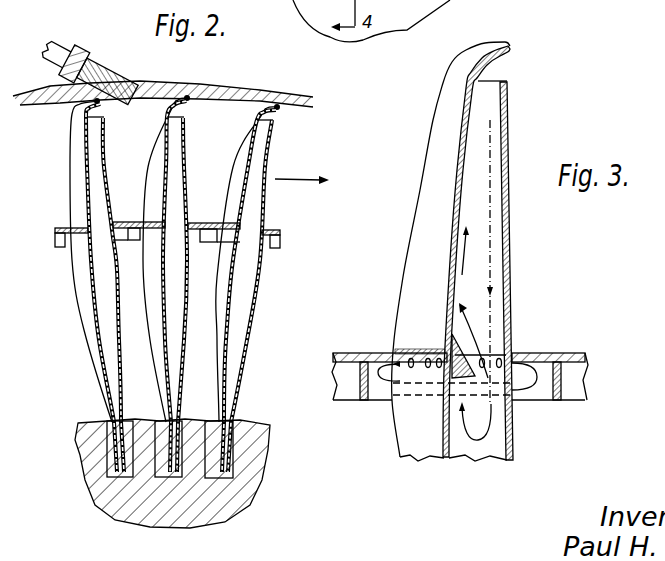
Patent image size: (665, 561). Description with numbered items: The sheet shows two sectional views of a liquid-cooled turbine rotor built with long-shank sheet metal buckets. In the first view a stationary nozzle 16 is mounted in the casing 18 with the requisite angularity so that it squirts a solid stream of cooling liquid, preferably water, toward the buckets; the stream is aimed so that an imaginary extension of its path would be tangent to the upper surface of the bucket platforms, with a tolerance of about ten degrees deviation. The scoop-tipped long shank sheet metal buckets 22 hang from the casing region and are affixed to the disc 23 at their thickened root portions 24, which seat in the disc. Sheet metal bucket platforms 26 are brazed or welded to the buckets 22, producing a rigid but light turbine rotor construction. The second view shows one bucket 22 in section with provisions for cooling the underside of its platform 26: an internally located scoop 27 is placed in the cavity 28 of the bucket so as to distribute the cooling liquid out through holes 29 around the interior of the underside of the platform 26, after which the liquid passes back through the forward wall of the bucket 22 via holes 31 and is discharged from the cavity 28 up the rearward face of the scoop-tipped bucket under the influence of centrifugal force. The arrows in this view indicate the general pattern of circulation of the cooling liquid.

In FIG. 2, the nozzle 16 is at (128, 86).
In FIG. 2, the casing 18 is at (226, 86).
In FIG. 2, the long shank sheet metal bucket 22 is at (159, 142).
In FIG. 2, the disc 23 is at (90, 421).
In FIG. 2, the thickened root portion 24 is at (110, 460).
In FIG. 2, the sheet metal bucket platform 26 is at (58, 227).
In FIG. 3, the sheet metal bucket platform 26 is at (380, 352).
In FIG. 3, the internally located scoop 27 is at (460, 320).
In FIG. 3, the cavity 28 is at (477, 197).
In FIG. 3, the holes 29 is at (439, 357).
In FIG. 3, the holes 31 is at (517, 357).